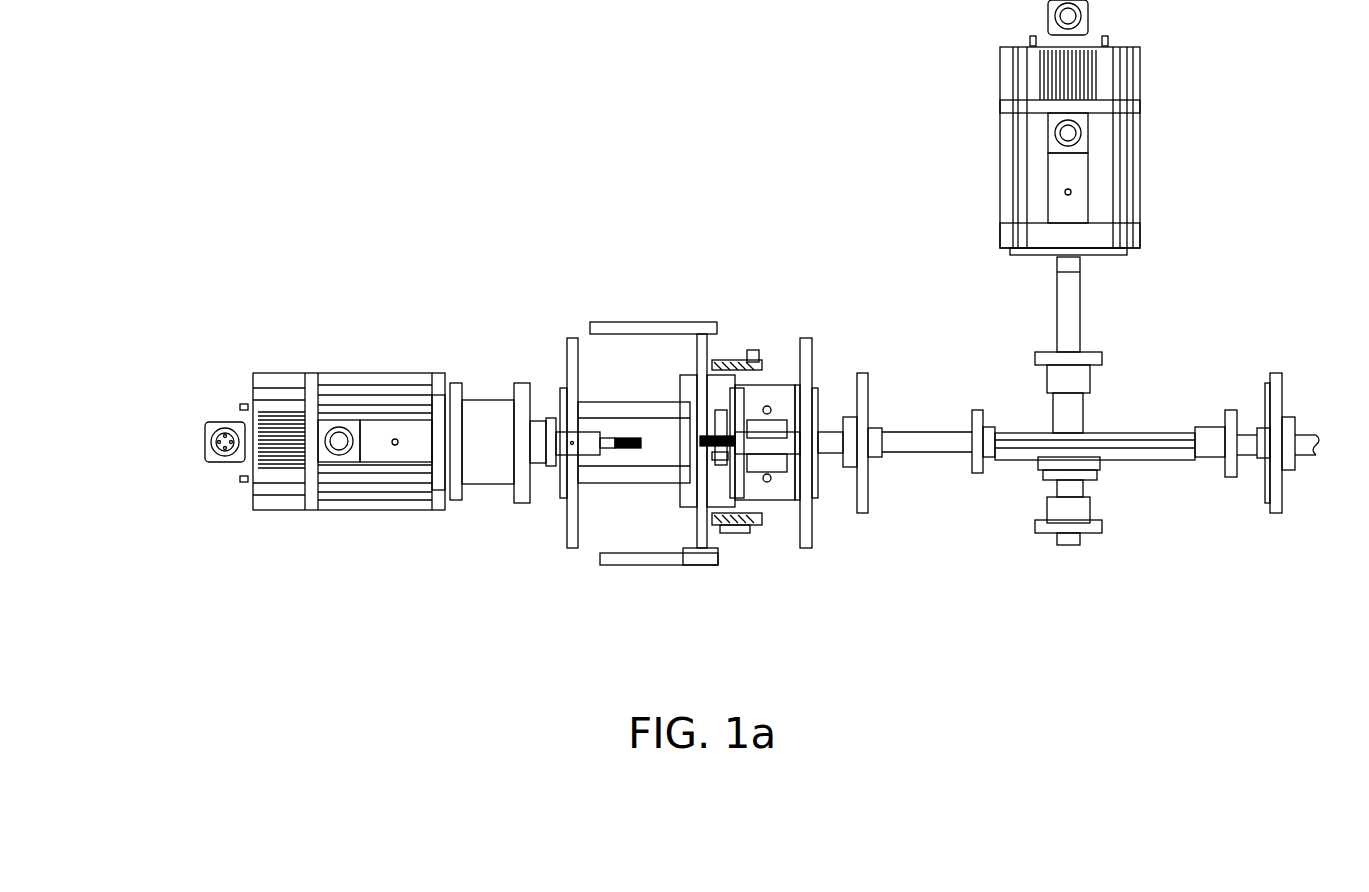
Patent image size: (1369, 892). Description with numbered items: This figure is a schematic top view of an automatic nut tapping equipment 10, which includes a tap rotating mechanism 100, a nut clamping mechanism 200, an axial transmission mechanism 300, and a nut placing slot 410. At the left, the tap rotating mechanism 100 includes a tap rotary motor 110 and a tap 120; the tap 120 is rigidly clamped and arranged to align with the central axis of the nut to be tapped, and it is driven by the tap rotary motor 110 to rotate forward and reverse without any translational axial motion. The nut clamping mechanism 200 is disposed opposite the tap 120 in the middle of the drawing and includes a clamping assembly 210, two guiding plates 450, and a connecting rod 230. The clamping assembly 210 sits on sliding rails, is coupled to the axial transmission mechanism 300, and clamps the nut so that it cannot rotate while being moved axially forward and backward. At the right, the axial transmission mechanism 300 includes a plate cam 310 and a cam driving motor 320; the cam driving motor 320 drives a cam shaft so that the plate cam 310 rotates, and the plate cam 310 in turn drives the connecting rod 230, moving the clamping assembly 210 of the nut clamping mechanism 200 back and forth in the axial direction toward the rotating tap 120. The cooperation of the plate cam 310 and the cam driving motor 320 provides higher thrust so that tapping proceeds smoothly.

The automatic nut tapping equipment 10 is at (156, 225).
The tap rotating mechanism 100 is at (360, 293).
The tap rotary motor 110 is at (300, 373).
The tap 120 is at (612, 437).
The nut clamping mechanism 200 is at (955, 617).
The clamping assembly 210 is at (682, 452).
The connecting rod 230 is at (927, 445).
The axial transmission mechanism 300 is at (1262, 126).
The plate cam 310 is at (1093, 433).
The cam driving motor 320 is at (1140, 135).
The nut placing slot 410 is at (710, 437).
The guiding plate 450 is at (772, 537).